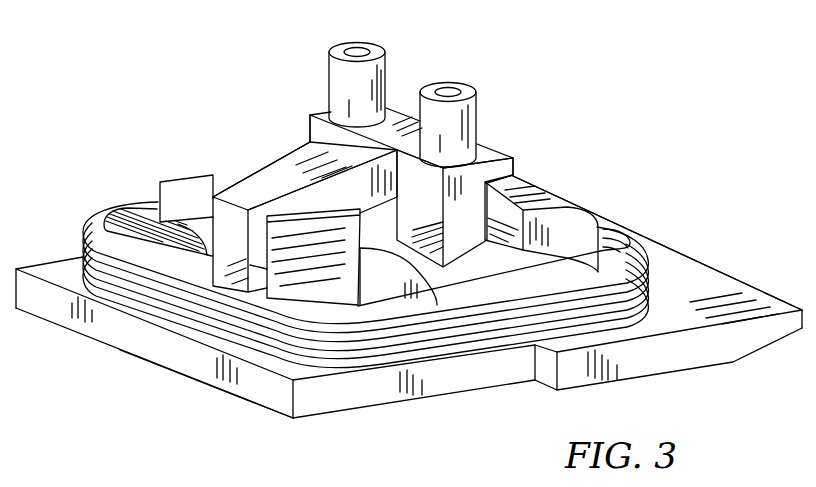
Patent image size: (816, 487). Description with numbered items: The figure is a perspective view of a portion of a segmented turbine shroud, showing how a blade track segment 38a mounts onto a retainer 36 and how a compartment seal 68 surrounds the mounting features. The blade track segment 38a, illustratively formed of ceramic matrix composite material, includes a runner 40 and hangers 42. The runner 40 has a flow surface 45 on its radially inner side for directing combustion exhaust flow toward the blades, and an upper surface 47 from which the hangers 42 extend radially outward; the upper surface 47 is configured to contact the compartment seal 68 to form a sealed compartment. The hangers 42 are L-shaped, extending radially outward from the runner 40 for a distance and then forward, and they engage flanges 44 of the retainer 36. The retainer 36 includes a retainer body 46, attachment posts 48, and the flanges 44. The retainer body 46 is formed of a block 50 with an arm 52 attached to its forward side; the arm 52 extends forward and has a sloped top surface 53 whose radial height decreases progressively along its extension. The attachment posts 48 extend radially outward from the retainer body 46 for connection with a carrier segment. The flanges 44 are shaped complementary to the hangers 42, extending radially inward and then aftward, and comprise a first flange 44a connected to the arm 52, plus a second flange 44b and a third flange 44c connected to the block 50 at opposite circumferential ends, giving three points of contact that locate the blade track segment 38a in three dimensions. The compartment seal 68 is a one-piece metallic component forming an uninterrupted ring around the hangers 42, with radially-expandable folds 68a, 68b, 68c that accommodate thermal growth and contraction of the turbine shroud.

The retainer 36 is at (508, 153).
The blade track segment 38a is at (644, 207).
The runner 40 is at (686, 284).
The hangers 42 is at (185, 178).
The flanges 44 is at (243, 247).
The first flange 44a is at (213, 255).
The second flange 44b is at (358, 212).
The third flange 44c is at (432, 232).
The flow surface 45 is at (187, 372).
The retainer body 46 is at (403, 51).
The upper surface 47 is at (713, 282).
The attachment posts 48 is at (365, 90).
The block 50 is at (395, 116).
The arm 52 is at (285, 173).
The sloped top surface 53 is at (257, 192).
The compartment seal 68 is at (345, 322).
The fold 68a is at (347, 369).
The fold 68b is at (320, 351).
The fold 68c is at (283, 331).